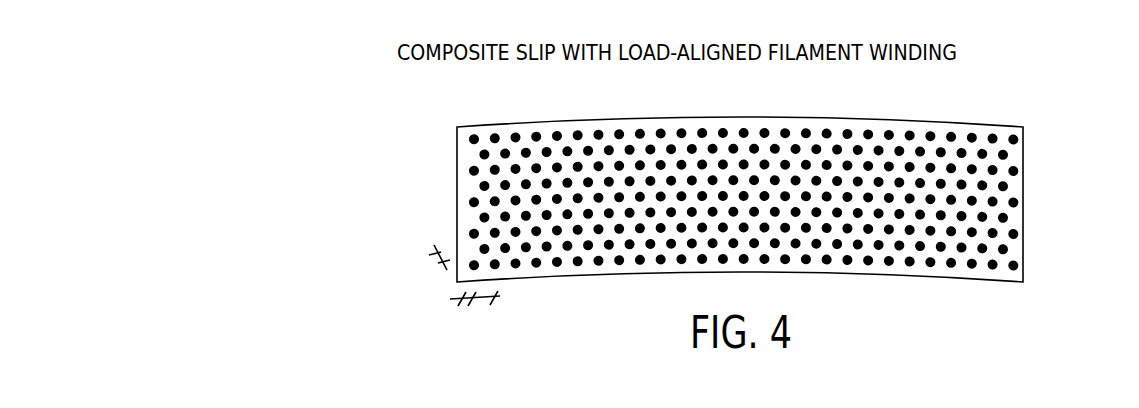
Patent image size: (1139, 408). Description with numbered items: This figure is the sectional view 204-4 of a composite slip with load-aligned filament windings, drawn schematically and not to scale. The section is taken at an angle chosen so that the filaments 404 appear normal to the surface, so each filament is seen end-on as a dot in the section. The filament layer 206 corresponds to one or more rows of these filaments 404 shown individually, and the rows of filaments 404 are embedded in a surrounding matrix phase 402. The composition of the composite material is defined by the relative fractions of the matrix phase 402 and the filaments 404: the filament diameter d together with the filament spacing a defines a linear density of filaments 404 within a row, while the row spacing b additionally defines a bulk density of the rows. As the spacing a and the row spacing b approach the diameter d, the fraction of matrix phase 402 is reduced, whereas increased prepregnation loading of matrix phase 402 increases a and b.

The sectional view of a composite slip with load-aligned filament windings 204-4 is at (303, 73).
The filament layer 206 is at (448, 166).
The matrix phase 402 is at (590, 132).
The filaments 404 is at (496, 134).
The row spacing b is at (434, 253).
The filament diameter d is at (461, 300).
The filament spacing a is at (481, 300).